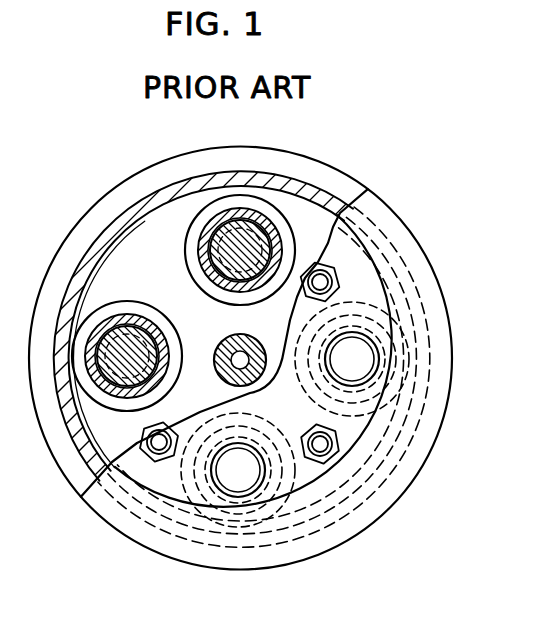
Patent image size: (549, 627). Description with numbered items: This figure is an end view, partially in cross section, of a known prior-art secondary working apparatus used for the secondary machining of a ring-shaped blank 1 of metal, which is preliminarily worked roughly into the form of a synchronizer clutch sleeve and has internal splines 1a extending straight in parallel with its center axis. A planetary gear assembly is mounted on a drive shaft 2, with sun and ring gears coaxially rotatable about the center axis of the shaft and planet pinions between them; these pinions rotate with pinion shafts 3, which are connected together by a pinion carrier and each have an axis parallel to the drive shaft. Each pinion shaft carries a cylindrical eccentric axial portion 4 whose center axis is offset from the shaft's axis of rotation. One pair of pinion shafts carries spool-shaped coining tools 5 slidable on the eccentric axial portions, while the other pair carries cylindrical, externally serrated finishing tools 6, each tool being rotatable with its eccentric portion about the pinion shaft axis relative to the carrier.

The ring-shaped blank 1 is at (116, 186).
The internal splines 1a is at (95, 272).
The drive shaft 2 is at (222, 345).
The pinion shafts 3 is at (193, 249).
The eccentric axial portion 4 is at (276, 246).
The coining tools 5 is at (263, 298).
The finishing tools 6 is at (78, 318).